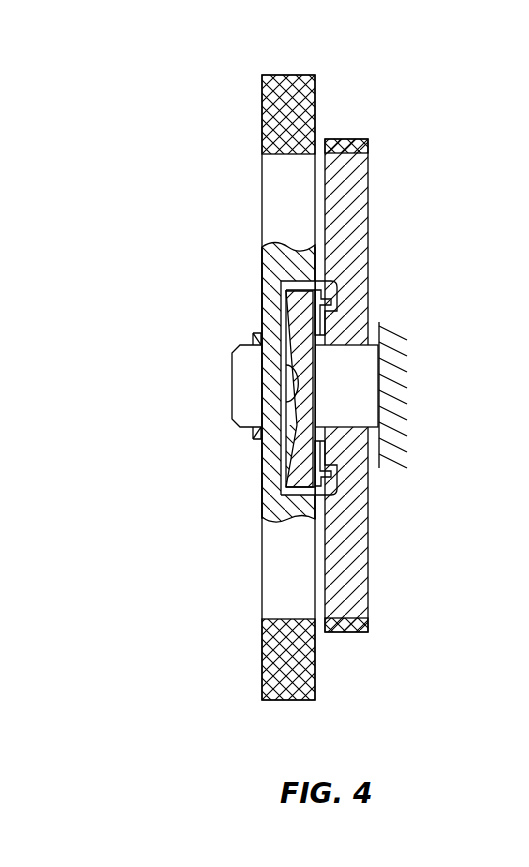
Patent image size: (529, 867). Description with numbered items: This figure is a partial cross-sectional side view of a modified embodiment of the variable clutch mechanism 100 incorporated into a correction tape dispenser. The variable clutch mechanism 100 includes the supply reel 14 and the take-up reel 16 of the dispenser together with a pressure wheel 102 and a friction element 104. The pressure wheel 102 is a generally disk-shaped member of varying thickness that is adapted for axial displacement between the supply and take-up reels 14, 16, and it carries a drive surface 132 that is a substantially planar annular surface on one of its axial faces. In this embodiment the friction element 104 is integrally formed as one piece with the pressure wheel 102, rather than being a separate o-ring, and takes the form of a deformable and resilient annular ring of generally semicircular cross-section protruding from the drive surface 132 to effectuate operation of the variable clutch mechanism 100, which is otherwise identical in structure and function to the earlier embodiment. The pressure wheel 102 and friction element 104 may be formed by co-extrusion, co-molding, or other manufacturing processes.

The variable clutch mechanism 100 is at (334, 378).
The supply reel 14 is at (285, 588).
The take-up reel 16 is at (358, 202).
The pressure wheel 102 is at (293, 308).
The friction element 104 is at (340, 302).
The drive surface 132 is at (315, 400).